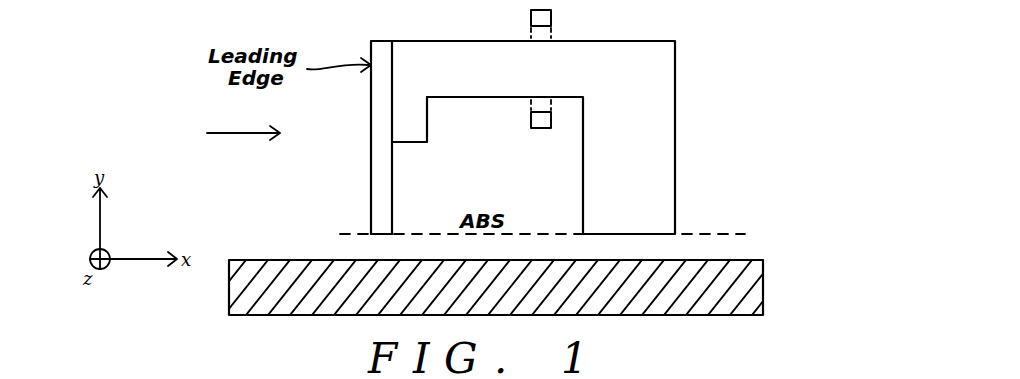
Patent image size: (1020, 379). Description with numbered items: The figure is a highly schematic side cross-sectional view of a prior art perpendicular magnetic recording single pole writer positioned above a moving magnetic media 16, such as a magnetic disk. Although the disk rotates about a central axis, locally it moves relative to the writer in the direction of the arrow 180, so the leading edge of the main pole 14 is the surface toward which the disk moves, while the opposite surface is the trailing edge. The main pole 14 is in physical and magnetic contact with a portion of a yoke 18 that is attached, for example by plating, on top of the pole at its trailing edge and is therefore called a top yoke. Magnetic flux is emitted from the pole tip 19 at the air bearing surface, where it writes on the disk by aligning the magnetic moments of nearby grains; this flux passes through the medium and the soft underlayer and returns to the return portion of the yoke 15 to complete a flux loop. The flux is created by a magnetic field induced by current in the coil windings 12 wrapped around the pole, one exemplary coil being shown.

The coil windings 12 is at (551, 20).
The main pole 14 is at (385, 155).
The return portion of the yoke 15 is at (653, 127).
The magnetic media 16 is at (743, 288).
The yoke 18 is at (407, 110).
The pole tip 19 is at (387, 243).
The arrow indicating direction of disk motion 180 is at (243, 124).